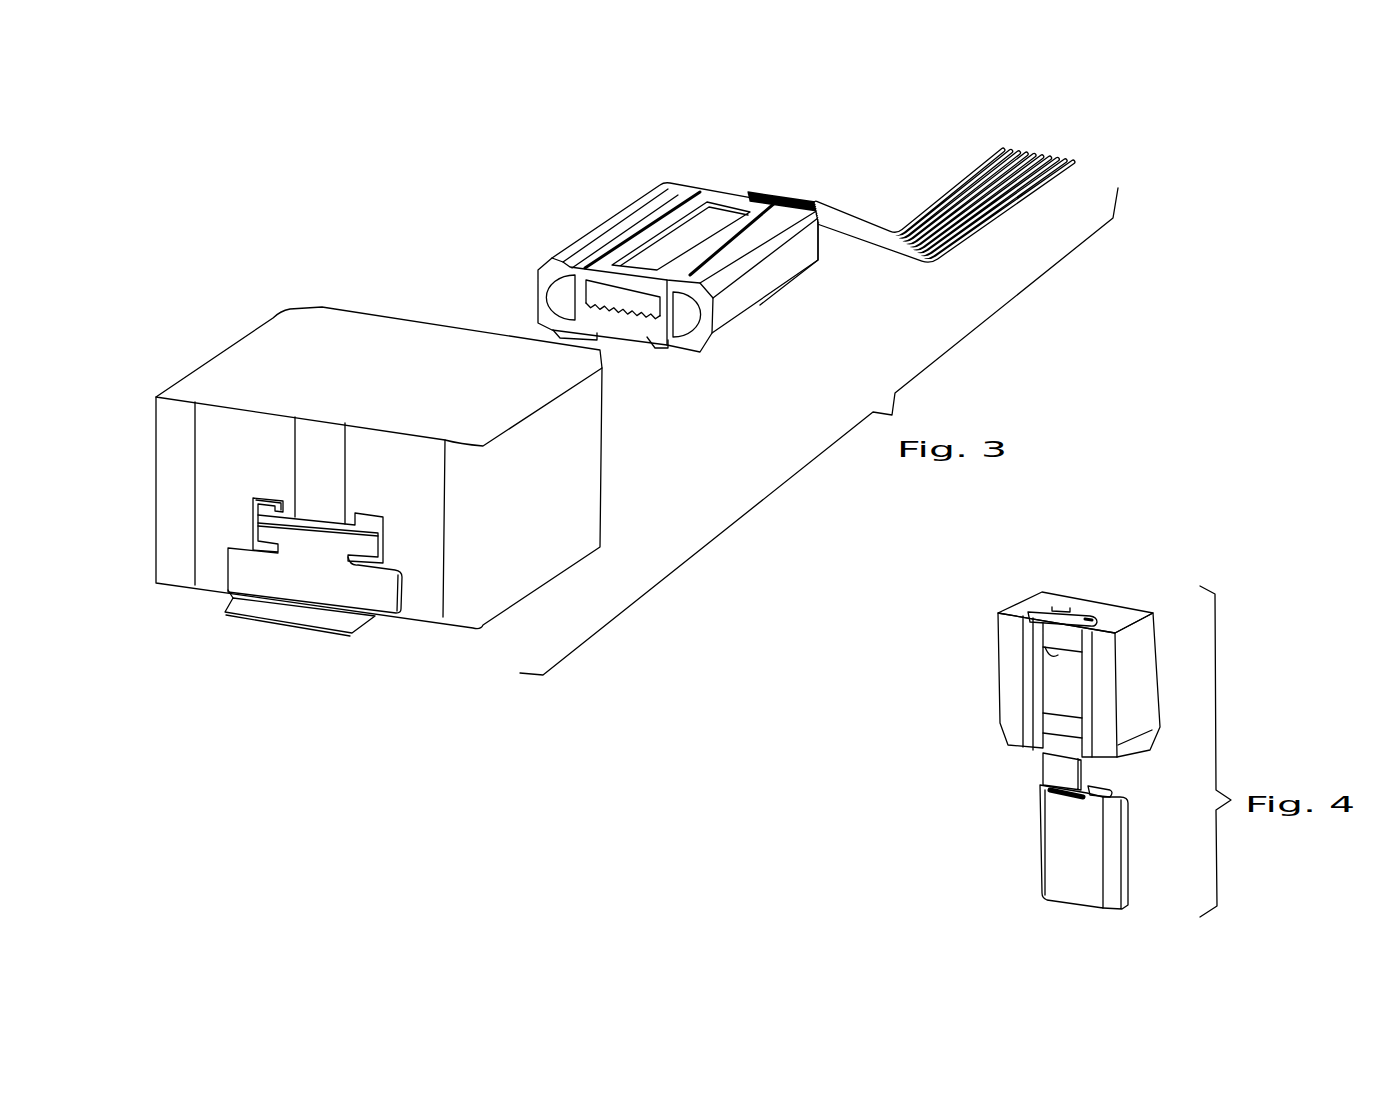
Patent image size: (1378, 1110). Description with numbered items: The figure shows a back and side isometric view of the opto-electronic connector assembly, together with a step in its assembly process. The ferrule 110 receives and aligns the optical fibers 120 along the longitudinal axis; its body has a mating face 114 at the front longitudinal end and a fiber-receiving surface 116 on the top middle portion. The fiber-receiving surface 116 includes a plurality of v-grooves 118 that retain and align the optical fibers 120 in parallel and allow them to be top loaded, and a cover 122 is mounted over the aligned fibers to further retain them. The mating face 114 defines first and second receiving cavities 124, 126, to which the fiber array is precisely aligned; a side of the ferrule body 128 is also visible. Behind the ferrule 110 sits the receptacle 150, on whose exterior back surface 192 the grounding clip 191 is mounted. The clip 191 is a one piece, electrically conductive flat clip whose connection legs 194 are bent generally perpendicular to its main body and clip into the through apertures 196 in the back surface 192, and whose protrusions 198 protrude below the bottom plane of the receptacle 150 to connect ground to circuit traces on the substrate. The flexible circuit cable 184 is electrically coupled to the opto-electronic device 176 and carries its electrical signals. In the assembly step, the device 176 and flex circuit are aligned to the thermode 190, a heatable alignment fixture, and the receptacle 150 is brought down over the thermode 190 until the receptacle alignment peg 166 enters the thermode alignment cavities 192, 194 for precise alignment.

In FIG. 3, the ferrule 110 is at (675, 232).
In FIG. 3, the mating face 114 is at (692, 343).
In FIG. 3, the fiber-receiving surface 116 is at (628, 300).
In FIG. 3, the v-grooves 118 is at (602, 300).
In FIG. 3, the optical fibers 120 is at (953, 181).
In FIG. 3, the cover 122 is at (695, 200).
In FIG. 3, the first receiving cavity 124 is at (690, 317).
In FIG. 3, the second receiving cavity 126 is at (553, 300).
In FIG. 3, the side wall of connector 128 is at (805, 262).
In FIG. 3, the receptacle 150 is at (228, 322).
In FIG. 4, the receptacle 150 is at (1054, 681).
In FIG. 4, the receptacle alignment peg 166 is at (1047, 652).
In FIG. 4, the opto-electronic device 176 is at (1097, 782).
In FIG. 3, the flexible circuit cable 184 is at (367, 627).
In FIG. 4, the thermode 190 is at (1077, 842).
In FIG. 3, the grounding clip 191 is at (317, 573).
In FIG. 3, the back surface 192 is at (254, 463).
In FIG. 4, the back surface 192 is at (1115, 789).
In FIG. 3, the connection legs 194 is at (330, 560).
In FIG. 4, the connection legs 194 is at (1040, 783).
In FIG. 3, the apertures 196 is at (265, 503).
In FIG. 3, the protrusions 198 is at (240, 596).